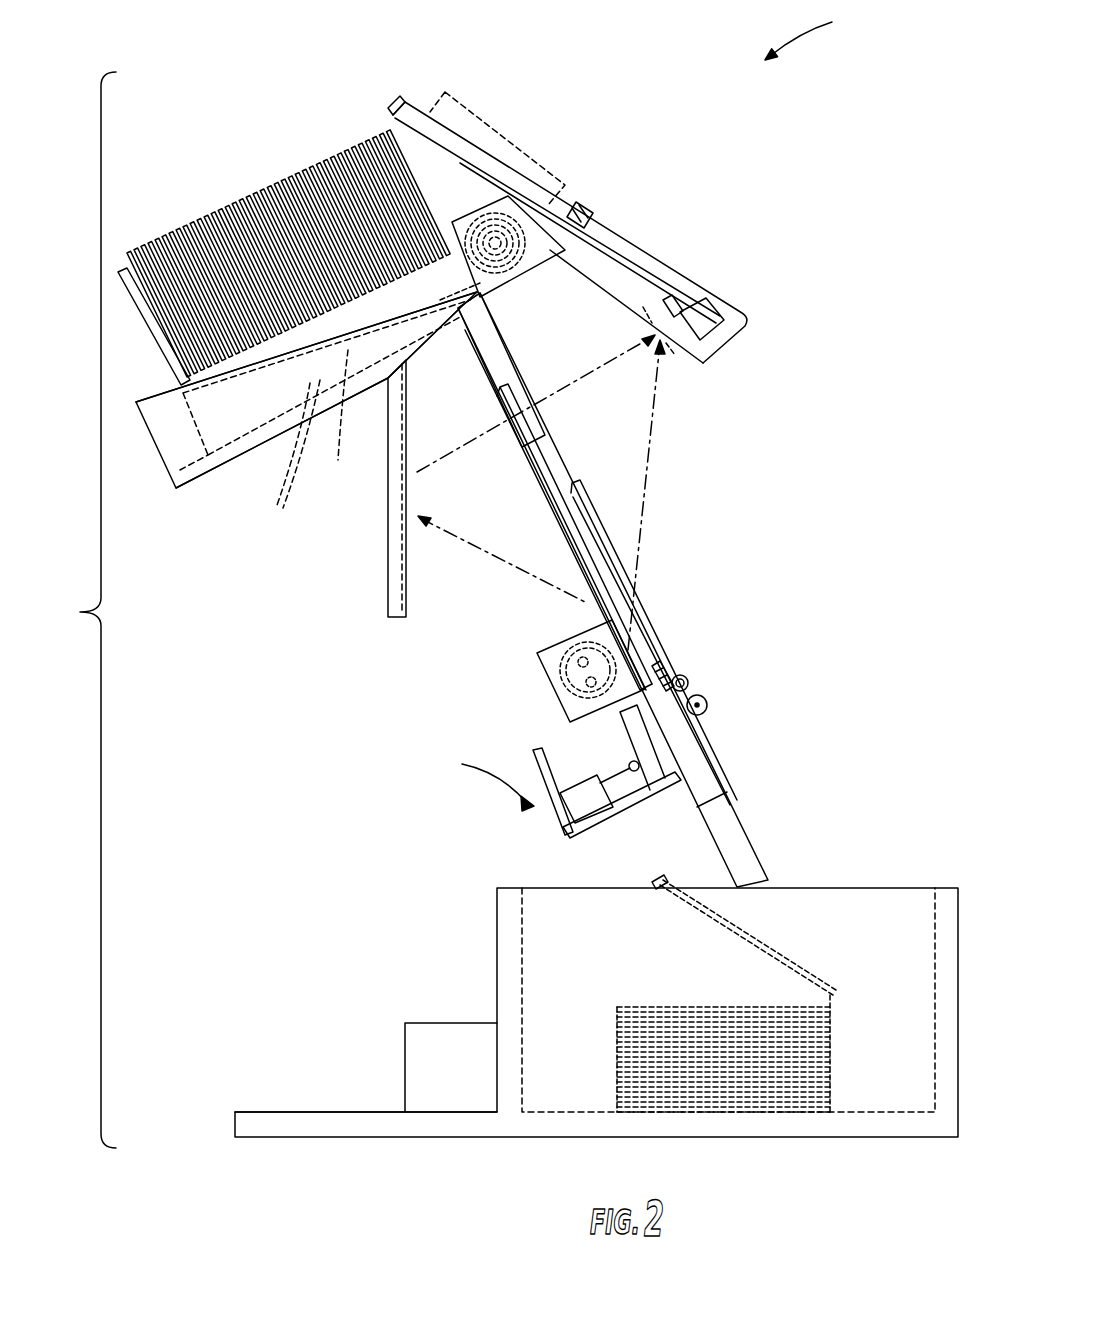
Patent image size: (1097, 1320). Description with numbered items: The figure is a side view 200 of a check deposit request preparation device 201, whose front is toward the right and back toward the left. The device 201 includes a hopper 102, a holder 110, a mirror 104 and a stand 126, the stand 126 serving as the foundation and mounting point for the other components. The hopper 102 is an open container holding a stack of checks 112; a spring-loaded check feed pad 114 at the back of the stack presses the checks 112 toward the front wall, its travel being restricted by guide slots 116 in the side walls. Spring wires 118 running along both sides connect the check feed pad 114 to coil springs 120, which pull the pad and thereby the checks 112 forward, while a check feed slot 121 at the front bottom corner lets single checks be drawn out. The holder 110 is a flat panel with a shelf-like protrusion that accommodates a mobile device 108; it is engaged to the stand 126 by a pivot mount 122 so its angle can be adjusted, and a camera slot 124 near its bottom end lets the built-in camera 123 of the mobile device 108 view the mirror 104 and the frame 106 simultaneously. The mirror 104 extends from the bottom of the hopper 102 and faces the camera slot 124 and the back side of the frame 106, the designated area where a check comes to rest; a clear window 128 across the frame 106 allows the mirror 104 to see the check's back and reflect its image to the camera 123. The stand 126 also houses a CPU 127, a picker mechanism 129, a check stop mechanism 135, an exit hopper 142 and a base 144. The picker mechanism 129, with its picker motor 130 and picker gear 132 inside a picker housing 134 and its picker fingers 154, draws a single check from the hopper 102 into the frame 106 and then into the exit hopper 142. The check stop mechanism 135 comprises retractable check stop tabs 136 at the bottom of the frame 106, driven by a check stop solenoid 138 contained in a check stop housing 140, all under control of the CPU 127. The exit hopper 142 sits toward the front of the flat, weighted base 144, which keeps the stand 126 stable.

The side view 200 is at (822, 30).
The check deposit request preparation device 201 is at (80, 610).
The hopper 102 is at (160, 438).
The mirror 104 is at (407, 577).
The frame 106 is at (610, 560).
The mobile device 108 is at (605, 240).
The holder 110 is at (401, 98).
The checks 112 is at (247, 223).
The check feed pad 114 is at (125, 283).
The guide slots 116 is at (292, 465).
The spring wires 118 is at (340, 423).
The coil springs 120 is at (503, 227).
The check feed slot 121 is at (480, 297).
The pivot mount 122 is at (543, 245).
The camera 123 is at (672, 300).
The camera slot 124 is at (693, 290).
The stand 126 is at (492, 352).
The central processing unit 127 is at (412, 1052).
The window 128 is at (542, 465).
The picker mechanism 129 is at (708, 703).
The picker motor 130 is at (560, 672).
The picker gear 132 is at (592, 693).
The picker housing 134 is at (541, 653).
The check stop mechanism 135 is at (479, 779).
The check stop tabs 136 is at (688, 682).
The check stop solenoid 138 is at (582, 810).
The check stop housing 140 is at (627, 810).
The exit hopper 142 is at (497, 913).
The base 144 is at (320, 1125).
The picker fingers 154 is at (658, 665).